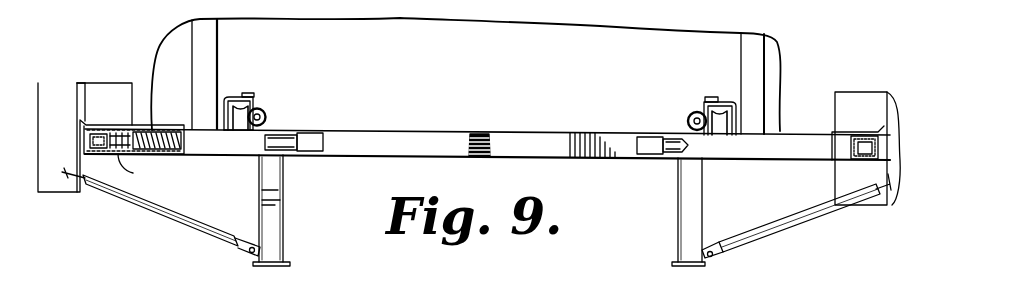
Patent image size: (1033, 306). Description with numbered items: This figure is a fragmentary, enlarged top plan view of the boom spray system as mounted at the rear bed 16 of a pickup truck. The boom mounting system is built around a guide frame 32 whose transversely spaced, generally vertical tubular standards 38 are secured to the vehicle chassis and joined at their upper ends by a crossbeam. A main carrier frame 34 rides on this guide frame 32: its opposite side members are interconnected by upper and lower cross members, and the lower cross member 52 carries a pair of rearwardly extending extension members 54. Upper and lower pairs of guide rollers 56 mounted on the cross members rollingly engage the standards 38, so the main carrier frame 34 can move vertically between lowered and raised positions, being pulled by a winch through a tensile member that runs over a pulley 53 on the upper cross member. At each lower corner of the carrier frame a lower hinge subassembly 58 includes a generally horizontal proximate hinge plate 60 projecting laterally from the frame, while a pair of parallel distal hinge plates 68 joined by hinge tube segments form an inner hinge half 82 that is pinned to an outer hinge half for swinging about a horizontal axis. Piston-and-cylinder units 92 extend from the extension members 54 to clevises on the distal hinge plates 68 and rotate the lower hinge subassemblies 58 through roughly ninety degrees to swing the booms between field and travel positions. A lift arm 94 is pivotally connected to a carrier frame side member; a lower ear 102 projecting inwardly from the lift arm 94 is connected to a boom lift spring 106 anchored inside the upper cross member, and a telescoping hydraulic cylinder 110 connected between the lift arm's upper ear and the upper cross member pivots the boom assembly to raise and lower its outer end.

The rear bed 16 is at (470, 70).
The guide frame 32 is at (267, 109).
The main carrier frame 34 is at (259, 264).
The standards 38 is at (266, 116).
The lower cross member 52 is at (234, 160).
The pulley 53 is at (494, 132).
The extension members 54 is at (290, 264).
The guide rollers 56 is at (696, 112).
The lower hinge subassembly 58 is at (876, 206).
The proximate hinge plate 60 is at (132, 84).
The distal hinge plates 68 is at (77, 83).
The inner hinge half 82 is at (66, 110).
The piston-and-cylinder units 92 is at (192, 233).
The lift arm 94 is at (89, 141).
The lower ear 102 is at (133, 173).
The boom lift spring 106 is at (172, 128).
The hydraulic cylinder 110 is at (290, 154).